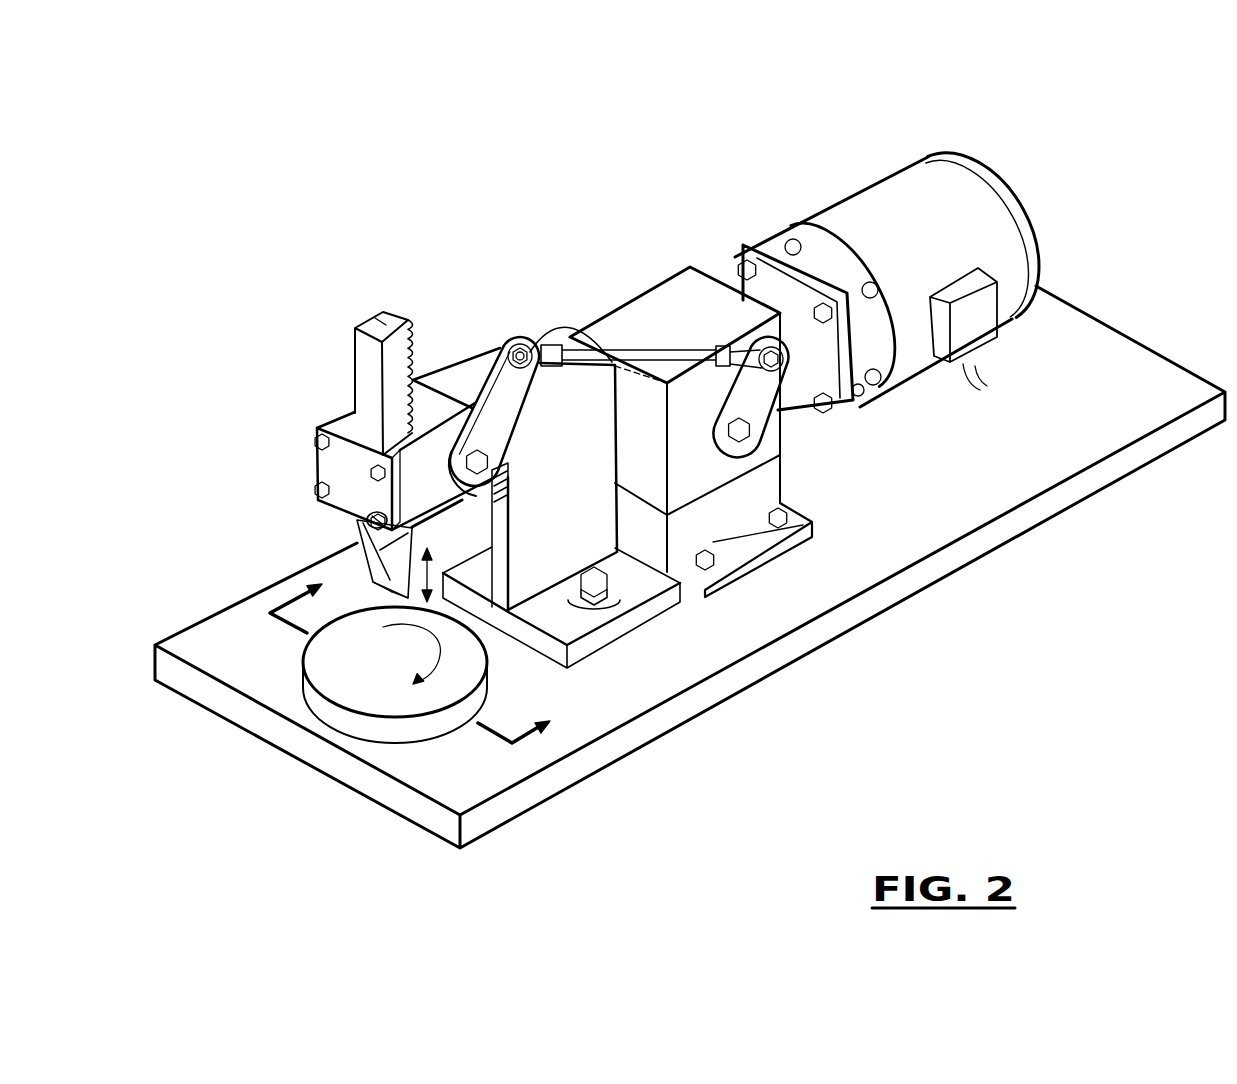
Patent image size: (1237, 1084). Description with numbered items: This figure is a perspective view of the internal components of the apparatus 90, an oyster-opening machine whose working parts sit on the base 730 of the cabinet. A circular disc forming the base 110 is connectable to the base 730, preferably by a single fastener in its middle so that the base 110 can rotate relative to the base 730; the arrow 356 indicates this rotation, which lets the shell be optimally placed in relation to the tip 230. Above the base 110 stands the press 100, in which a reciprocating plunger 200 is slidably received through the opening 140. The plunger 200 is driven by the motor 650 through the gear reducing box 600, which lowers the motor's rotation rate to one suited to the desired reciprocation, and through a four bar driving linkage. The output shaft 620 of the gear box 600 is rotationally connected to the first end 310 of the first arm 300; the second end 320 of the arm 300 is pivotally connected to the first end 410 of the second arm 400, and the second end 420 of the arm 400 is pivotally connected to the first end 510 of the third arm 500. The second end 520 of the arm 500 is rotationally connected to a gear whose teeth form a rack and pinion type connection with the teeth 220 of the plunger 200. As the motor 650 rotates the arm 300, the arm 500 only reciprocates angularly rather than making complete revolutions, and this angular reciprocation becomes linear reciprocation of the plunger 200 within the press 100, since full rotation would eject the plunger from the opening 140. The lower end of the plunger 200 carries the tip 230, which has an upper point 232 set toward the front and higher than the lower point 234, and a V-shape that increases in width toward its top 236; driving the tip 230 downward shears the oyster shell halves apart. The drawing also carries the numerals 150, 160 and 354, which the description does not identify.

The apparatus 90 is at (1088, 136).
The press 100 is at (592, 558).
The base 110 is at (383, 700).
The opening 140 is at (352, 407).
The clamp plate 150 is at (333, 462).
The clamp bolts 160 is at (314, 490).
The plunger 200 is at (373, 314).
The teeth 220 is at (425, 362).
The tip 230 is at (367, 572).
The upper point 232 is at (367, 583).
The lower point 234 is at (390, 594).
The top 236 is at (366, 521).
The arm 300 is at (784, 418).
The first end 310 is at (778, 395).
The second end 320 is at (862, 388).
The reciprocation arrow 354 is at (433, 556).
The arrow 356 is at (480, 647).
The arm 400 is at (622, 352).
The first end 410 is at (910, 399).
The second end 420 is at (557, 340).
The arm 500 is at (477, 365).
The first end 510 is at (551, 292).
The second end 520 is at (505, 448).
The gear reducing box 600 is at (698, 288).
The output shaft 620 is at (809, 568).
The motor 650 is at (977, 210).
The base 730 is at (1097, 437).